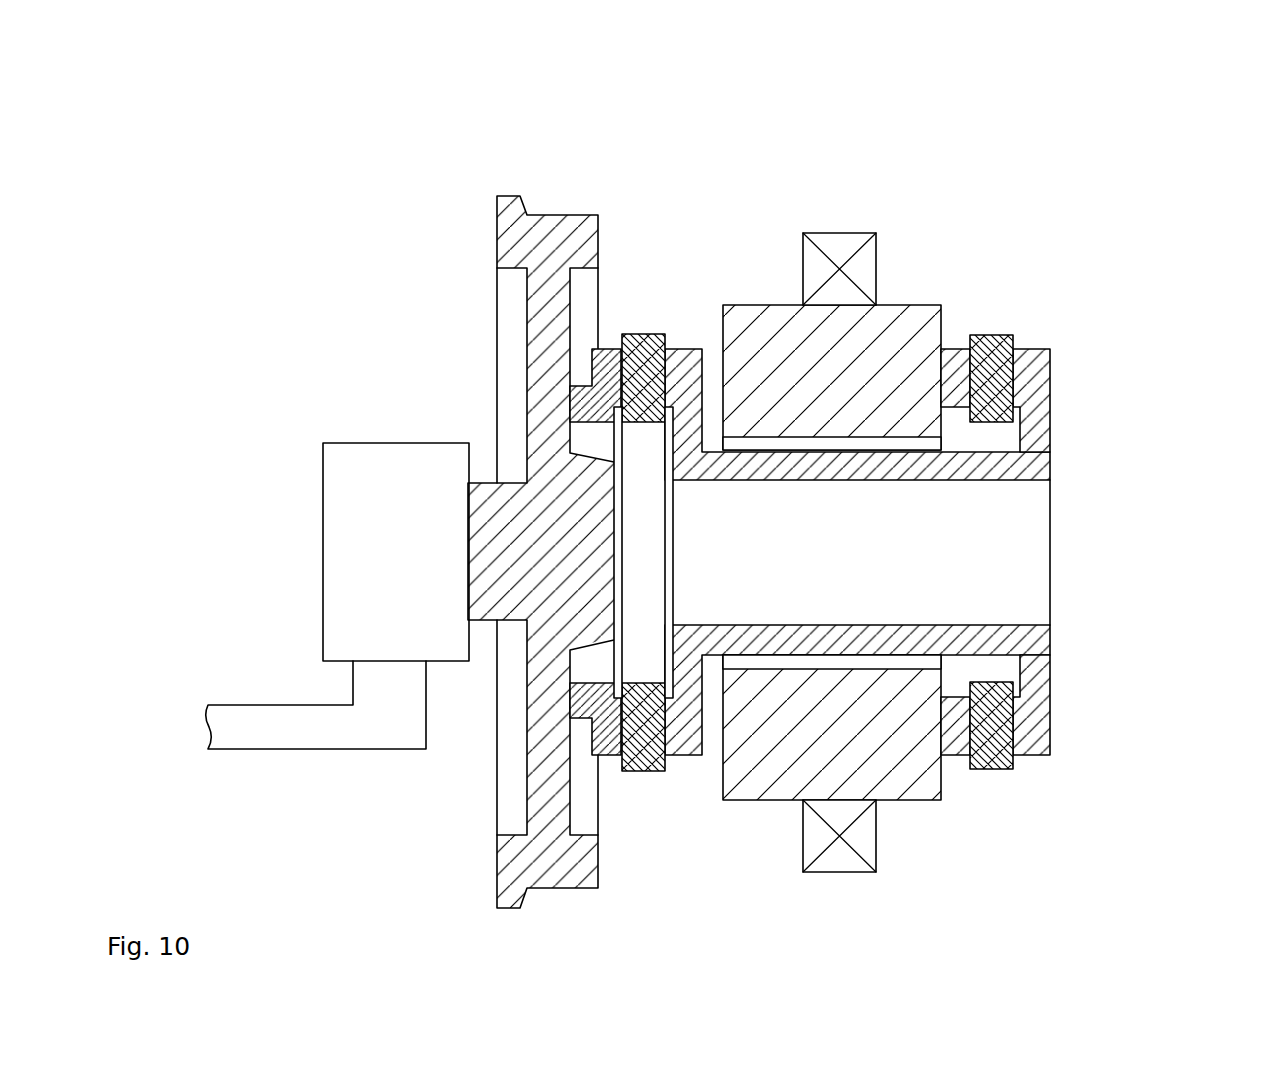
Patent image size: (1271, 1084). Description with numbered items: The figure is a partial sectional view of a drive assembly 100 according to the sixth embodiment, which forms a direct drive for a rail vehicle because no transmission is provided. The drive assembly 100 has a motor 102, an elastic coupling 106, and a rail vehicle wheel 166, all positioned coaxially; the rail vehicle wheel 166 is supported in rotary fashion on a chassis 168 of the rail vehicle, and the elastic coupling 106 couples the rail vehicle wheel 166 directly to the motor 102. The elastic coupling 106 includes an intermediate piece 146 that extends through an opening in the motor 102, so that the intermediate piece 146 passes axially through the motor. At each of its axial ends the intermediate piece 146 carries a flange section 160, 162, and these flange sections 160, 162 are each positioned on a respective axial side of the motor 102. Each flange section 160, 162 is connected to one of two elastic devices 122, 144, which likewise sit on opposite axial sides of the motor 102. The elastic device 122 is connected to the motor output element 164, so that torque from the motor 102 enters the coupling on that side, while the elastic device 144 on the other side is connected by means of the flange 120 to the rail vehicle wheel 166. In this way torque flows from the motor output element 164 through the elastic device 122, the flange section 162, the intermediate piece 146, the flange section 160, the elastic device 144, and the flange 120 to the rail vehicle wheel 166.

The drive assembly 100 is at (1008, 168).
The motor 102 is at (923, 302).
The elastic coupling 106 is at (1073, 382).
The flange 120 is at (603, 363).
The elastic device 122 is at (1000, 340).
The elastic device 144 is at (647, 365).
The intermediate piece 146 is at (752, 651).
The flange section 160 is at (688, 362).
The flange section 162 is at (1046, 350).
The motor output element 164 is at (957, 738).
The rail vehicle wheel 166 is at (587, 180).
The chassis 168 is at (422, 425).